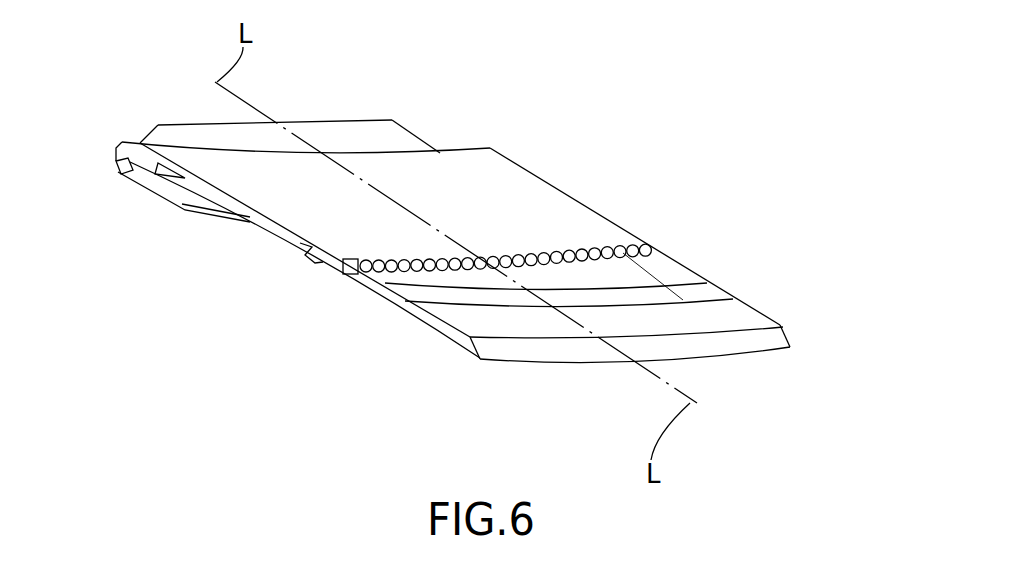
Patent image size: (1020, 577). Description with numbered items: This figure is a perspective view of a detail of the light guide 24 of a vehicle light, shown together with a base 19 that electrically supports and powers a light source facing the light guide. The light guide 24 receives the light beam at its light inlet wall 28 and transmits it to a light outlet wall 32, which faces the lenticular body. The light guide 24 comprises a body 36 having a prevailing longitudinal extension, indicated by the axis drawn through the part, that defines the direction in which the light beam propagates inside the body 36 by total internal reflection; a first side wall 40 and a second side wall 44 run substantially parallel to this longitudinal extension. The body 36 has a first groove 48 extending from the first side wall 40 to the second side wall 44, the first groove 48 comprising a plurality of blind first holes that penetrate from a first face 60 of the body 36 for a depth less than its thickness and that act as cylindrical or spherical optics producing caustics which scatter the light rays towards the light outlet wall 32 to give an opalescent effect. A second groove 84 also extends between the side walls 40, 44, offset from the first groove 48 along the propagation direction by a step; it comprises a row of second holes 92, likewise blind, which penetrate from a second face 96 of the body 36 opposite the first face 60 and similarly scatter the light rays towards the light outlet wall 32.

The base 19 is at (158, 200).
The light guide 24 is at (547, 223).
The light inlet wall 28 is at (142, 158).
The light outlet wall 32 is at (733, 342).
The body 36 is at (622, 226).
The first side wall 40 is at (277, 230).
The second side wall 44 is at (521, 160).
The first groove 48 is at (307, 264).
The first face 60 is at (377, 307).
The second groove 84 is at (653, 250).
The second holes 92 is at (733, 298).
The second face 96 is at (441, 206).